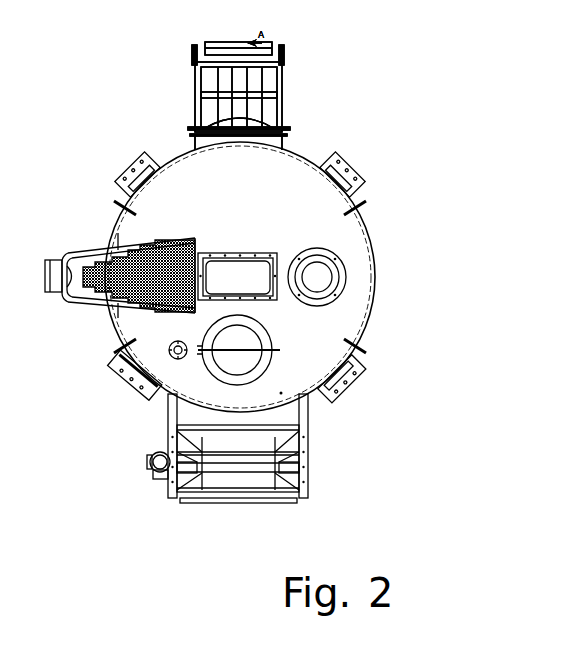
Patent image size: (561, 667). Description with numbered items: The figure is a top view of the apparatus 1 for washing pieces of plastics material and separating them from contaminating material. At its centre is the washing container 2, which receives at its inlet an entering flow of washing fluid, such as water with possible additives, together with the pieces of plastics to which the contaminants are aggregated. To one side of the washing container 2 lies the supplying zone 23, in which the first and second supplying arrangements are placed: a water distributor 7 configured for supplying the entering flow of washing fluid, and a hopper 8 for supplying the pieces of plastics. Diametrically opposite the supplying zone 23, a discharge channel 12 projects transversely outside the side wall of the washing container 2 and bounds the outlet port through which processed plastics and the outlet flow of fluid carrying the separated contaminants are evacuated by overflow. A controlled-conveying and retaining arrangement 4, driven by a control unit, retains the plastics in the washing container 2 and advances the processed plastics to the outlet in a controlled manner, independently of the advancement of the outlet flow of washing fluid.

The apparatus 1 is at (423, 217).
The washing container 2 is at (370, 300).
The controlled-conveying and retaining arrangement 4 is at (210, 475).
The water distributor 7 is at (310, 78).
The hopper 8 is at (310, 78).
The discharge channel 12 is at (303, 463).
The supplying zone 23 is at (175, 82).